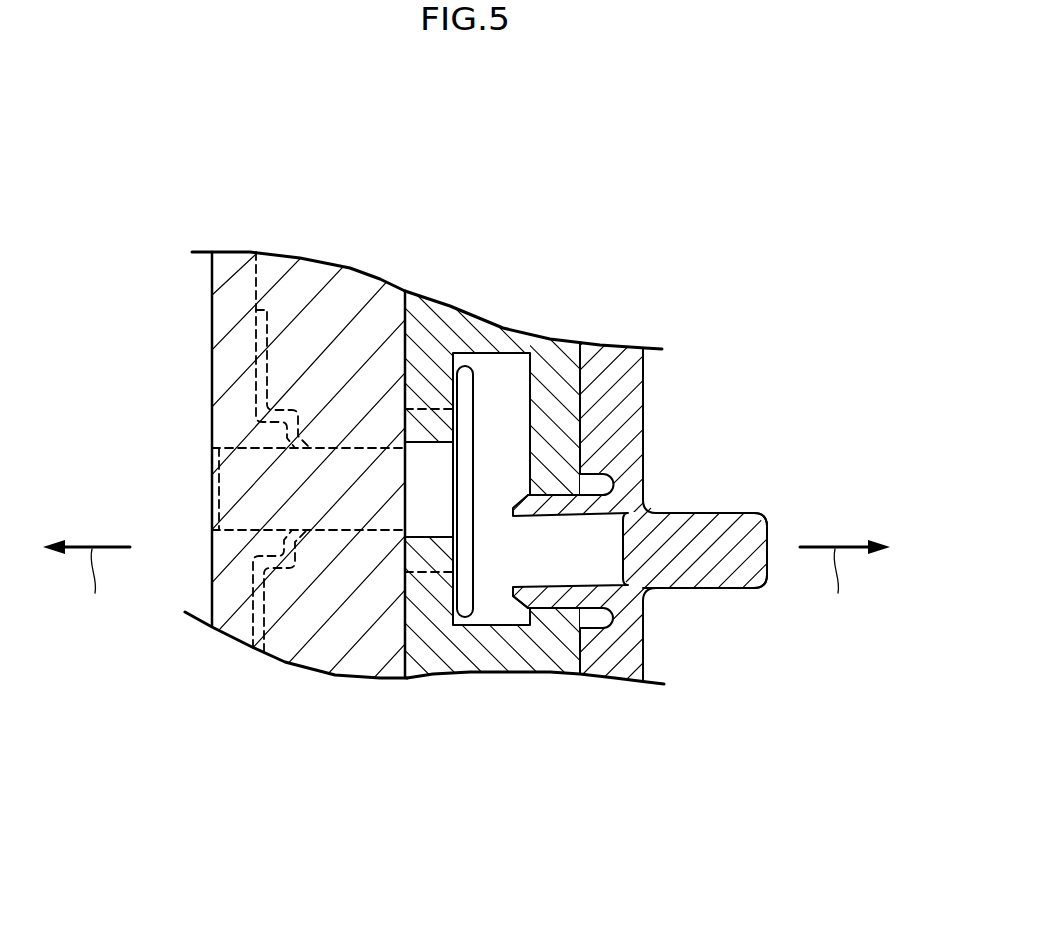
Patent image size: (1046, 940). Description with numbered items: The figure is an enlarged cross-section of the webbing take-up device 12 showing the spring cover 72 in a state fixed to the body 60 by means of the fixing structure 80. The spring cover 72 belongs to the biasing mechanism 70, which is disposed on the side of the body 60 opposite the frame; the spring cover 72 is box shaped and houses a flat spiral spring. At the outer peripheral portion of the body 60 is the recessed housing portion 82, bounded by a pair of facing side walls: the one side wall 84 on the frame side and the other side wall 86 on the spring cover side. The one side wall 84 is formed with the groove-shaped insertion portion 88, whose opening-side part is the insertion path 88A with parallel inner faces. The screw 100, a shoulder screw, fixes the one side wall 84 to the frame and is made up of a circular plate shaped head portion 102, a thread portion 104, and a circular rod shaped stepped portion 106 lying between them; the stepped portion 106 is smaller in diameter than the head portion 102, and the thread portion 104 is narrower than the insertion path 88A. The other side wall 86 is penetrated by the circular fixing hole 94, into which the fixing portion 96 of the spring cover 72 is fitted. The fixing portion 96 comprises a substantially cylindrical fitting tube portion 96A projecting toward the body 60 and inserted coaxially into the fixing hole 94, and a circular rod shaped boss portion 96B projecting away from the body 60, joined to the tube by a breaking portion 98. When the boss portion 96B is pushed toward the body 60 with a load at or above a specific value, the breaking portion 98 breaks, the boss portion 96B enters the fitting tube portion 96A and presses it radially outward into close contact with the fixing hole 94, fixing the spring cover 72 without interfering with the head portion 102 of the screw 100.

The webbing take-up device 12 is at (570, 152).
The body 60 is at (428, 684).
The biasing mechanism 70 is at (650, 435).
The spring cover 72 is at (645, 468).
The fixing structure 80 is at (652, 243).
The housing portion 82 is at (490, 357).
The one side wall 84 is at (432, 555).
The other side wall 86 is at (567, 393).
The insertion portion 88 is at (451, 316).
The insertion path 88A is at (427, 443).
The fixing hole 94 is at (551, 607).
The fixing portion 96 is at (743, 755).
The fitting tube portion 96A is at (641, 595).
The boss portion 96B is at (722, 592).
The breaking portion 98 is at (643, 594).
The screw 100 is at (478, 402).
The head portion 102 is at (475, 532).
The thread portion 104 is at (233, 533).
The stepped portion 106 is at (412, 513).